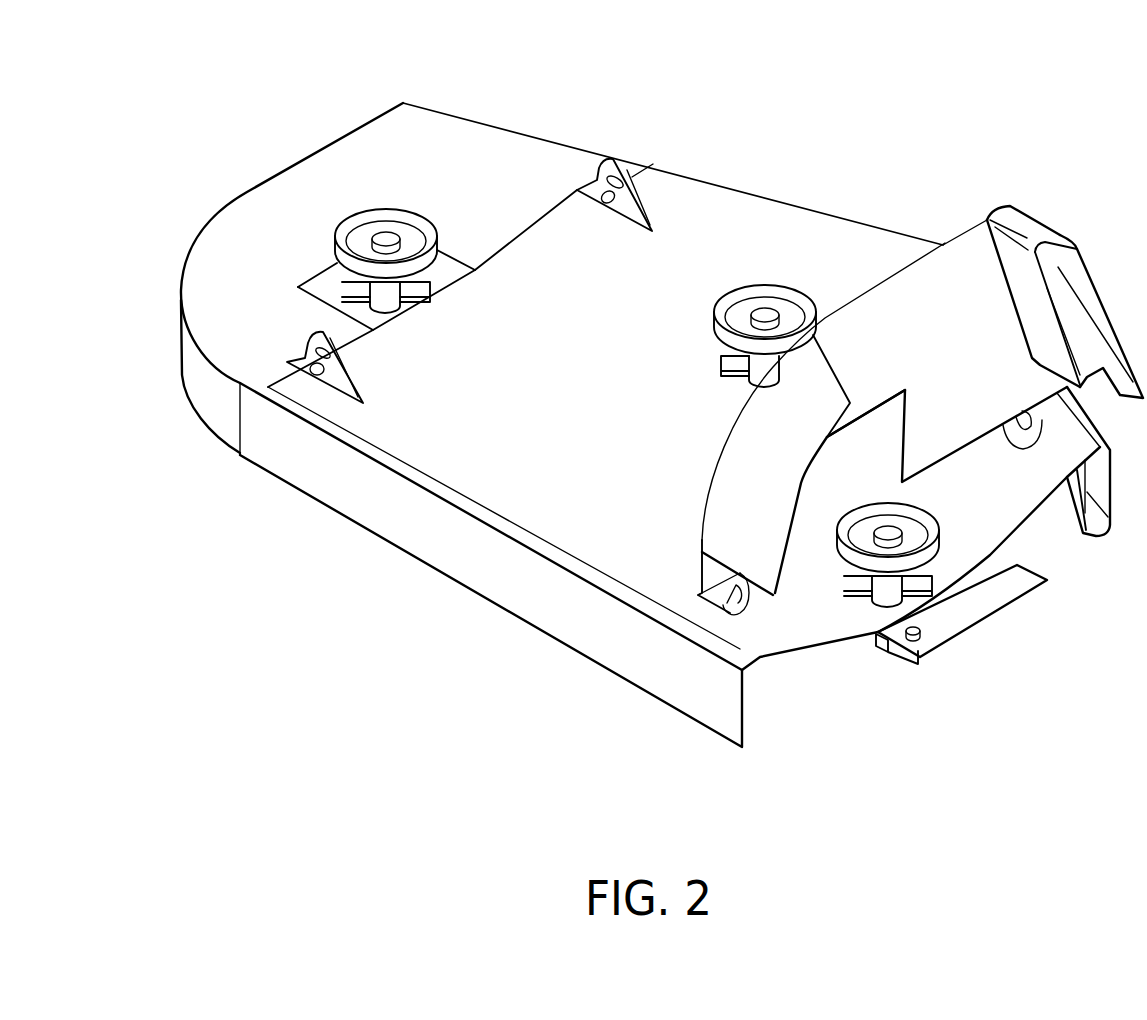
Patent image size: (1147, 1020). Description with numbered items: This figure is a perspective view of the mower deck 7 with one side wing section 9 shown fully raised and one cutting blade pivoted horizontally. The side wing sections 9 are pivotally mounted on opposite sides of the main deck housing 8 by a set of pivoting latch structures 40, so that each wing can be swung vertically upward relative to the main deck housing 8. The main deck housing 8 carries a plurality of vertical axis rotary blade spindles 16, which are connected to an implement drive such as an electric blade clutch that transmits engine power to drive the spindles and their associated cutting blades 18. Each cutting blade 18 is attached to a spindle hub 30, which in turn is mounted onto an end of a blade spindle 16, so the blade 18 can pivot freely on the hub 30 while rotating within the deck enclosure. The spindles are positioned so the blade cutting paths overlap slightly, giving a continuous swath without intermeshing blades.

The mower deck assembly 7 is at (344, 633).
The main deck housing 8 is at (410, 437).
The side wing section 9 is at (497, 177).
The blade spindle 16 is at (386, 232).
The cutting blade 18 is at (970, 610).
The spindle hub 30 is at (915, 643).
The pivoting latch structure 40 is at (370, 368).